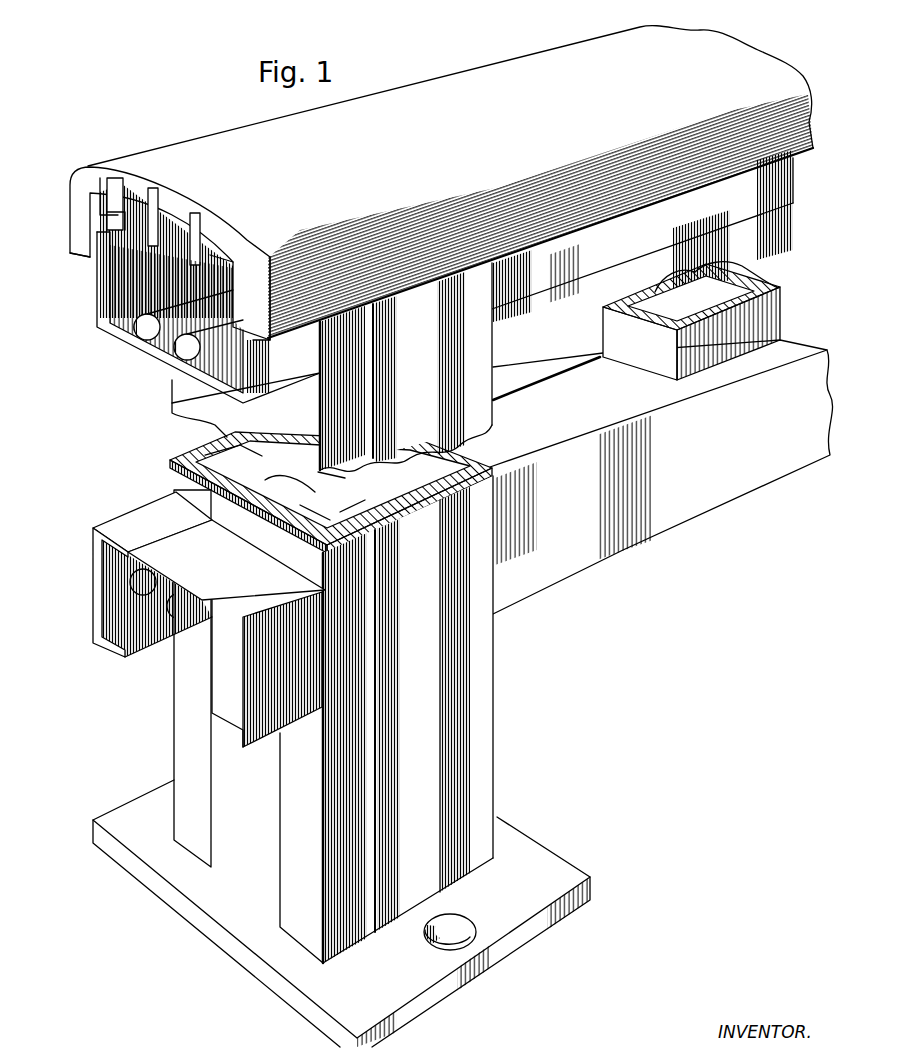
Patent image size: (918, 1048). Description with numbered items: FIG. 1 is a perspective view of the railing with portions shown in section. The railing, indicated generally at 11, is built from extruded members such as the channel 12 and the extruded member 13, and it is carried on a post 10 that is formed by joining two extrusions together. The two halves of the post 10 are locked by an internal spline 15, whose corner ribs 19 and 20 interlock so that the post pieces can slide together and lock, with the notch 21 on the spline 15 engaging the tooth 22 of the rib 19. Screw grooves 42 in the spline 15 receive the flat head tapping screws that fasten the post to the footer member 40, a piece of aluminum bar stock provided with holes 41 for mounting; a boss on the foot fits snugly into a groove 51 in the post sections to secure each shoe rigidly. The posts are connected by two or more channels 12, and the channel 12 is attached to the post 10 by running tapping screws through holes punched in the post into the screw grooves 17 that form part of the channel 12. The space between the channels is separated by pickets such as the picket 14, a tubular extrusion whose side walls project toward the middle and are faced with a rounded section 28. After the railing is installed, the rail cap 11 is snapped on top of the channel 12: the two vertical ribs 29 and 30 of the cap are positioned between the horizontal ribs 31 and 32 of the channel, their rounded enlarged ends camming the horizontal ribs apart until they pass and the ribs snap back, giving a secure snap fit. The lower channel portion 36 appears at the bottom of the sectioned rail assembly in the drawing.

The post 10 is at (494, 730).
The rail cap 11 is at (372, 182).
The channel 12 is at (130, 339).
The extruded member 13 is at (88, 257).
The picket 14 is at (780, 323).
The spline 15 is at (349, 508).
The screw grooves 17 is at (187, 350).
The corner rib 19 is at (353, 518).
The corner rib 20 is at (327, 523).
The notch 21 is at (327, 471).
The tooth 22 is at (283, 487).
The rounded section 28 is at (740, 290).
The vertical rib 29 is at (125, 227).
The vertical rib 30 is at (262, 264).
The horizontal rib 31 is at (110, 195).
The horizontal rib 32 is at (226, 255).
The lower channel 36 is at (243, 747).
The footer member 40 is at (545, 848).
The holes 41 is at (463, 924).
The screw grooves 42 is at (224, 443).
The groove 51 is at (444, 772).